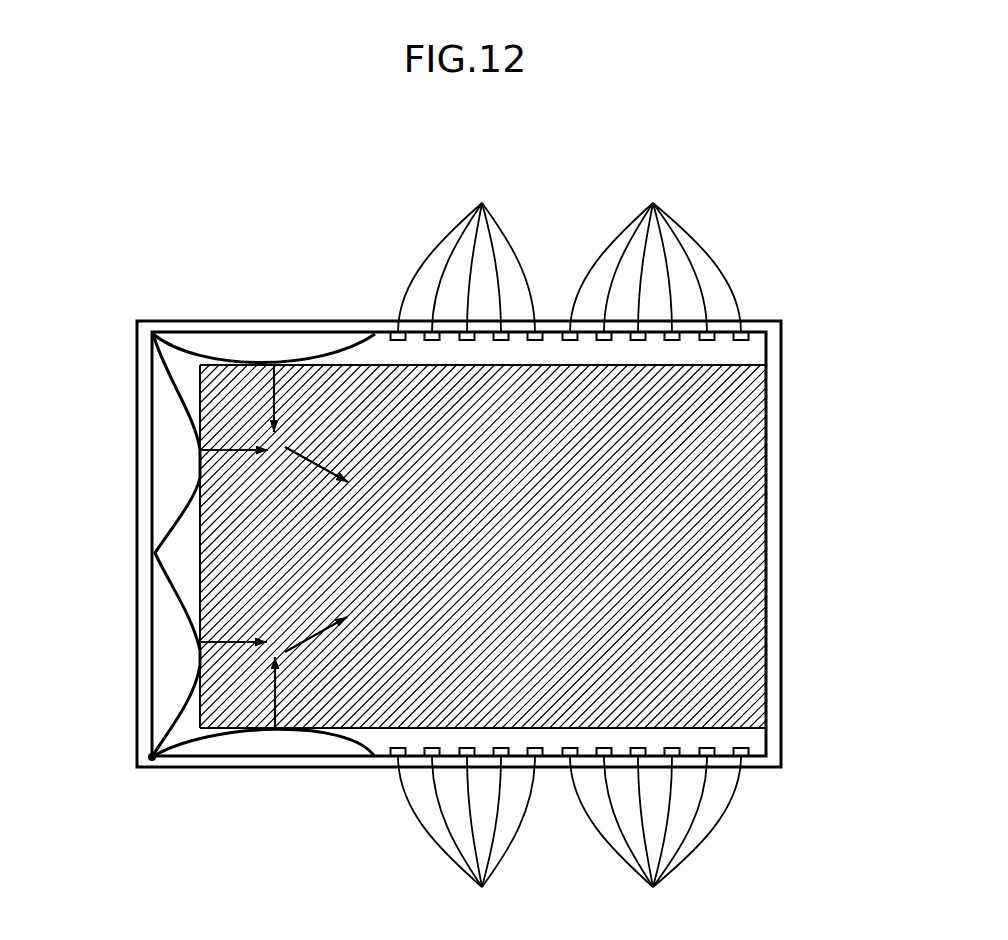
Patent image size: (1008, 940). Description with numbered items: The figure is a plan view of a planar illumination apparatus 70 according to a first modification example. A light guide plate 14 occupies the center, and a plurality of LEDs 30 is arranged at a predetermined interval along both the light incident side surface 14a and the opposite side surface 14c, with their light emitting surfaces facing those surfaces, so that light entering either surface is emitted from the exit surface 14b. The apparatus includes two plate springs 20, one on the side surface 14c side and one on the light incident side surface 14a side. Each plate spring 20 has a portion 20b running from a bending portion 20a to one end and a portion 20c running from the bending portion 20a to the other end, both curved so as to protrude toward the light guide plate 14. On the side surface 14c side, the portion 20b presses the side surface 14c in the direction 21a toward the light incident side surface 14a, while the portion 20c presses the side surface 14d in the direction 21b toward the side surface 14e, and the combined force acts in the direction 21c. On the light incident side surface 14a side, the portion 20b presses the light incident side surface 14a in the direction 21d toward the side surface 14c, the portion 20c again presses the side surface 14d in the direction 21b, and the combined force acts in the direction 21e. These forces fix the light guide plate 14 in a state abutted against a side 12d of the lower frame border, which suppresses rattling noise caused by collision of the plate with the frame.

The planar illumination apparatus 70 is at (596, 186).
The light guide plate 14 is at (750, 449).
The light incident side surface 14a is at (551, 731).
The exit surface 14b is at (742, 548).
The side surface 14c is at (551, 363).
The side surface 14d is at (196, 703).
The side surface 14e is at (770, 606).
The side 12d is at (763, 649).
The plate spring 20 is at (216, 550).
The bending portion 20a is at (152, 760).
The portion 20b is at (315, 355).
The portion 20c is at (168, 380).
The direction 21a is at (274, 393).
The direction 21b is at (228, 452).
The direction 21c is at (320, 468).
The direction 21d is at (277, 690).
The direction 21e is at (316, 632).
The LEDs 30 is at (482, 205).